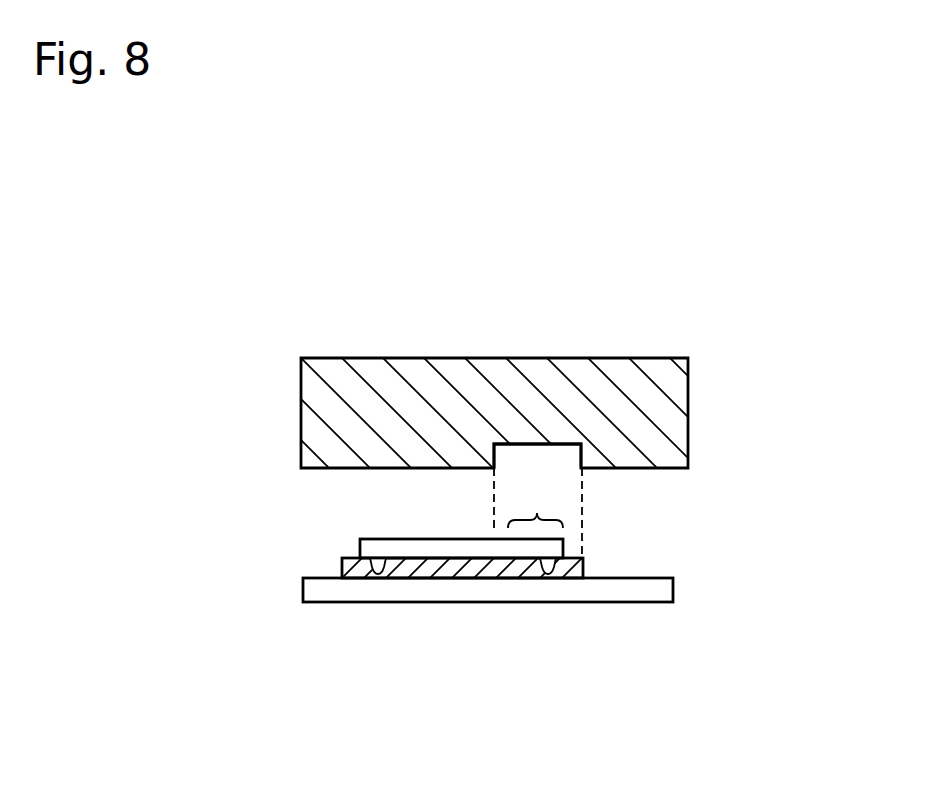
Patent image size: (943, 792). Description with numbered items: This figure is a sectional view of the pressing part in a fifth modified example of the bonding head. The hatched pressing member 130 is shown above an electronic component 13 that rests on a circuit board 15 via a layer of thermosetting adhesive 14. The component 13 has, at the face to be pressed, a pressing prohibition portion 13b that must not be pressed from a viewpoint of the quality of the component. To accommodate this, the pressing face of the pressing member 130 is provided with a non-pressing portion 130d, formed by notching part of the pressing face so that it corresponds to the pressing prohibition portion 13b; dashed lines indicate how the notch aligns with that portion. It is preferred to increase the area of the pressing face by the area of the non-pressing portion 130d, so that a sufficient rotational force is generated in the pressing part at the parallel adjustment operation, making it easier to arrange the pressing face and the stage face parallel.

The pressing member 130 is at (667, 410).
The non-pressing portion 130d is at (542, 455).
The pressing prohibition portion 13b is at (537, 513).
The electronic component 13 is at (362, 546).
The thermosetting adhesive 14 is at (389, 574).
The circuit board 15 is at (413, 592).